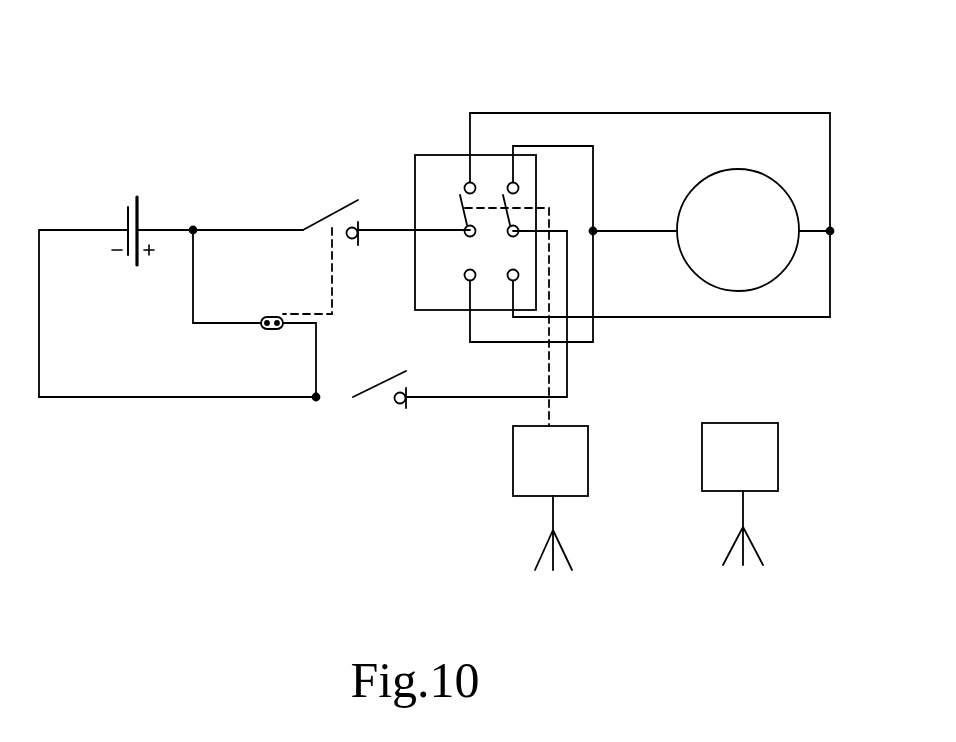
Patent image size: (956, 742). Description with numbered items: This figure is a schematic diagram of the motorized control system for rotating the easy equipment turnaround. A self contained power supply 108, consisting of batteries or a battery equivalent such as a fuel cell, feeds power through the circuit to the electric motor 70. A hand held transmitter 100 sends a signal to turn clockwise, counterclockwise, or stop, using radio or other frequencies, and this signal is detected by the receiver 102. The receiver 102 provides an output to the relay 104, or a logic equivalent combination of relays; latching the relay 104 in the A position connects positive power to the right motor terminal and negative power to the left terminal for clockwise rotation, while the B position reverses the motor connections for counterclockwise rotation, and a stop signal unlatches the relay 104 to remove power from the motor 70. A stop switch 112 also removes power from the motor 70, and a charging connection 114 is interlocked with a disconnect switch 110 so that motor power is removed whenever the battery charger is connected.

The electric motor 70 is at (739, 202).
The transmitter 100 is at (765, 450).
The receiver 102 is at (578, 458).
The relay 104 is at (457, 172).
The self contained power supply 108 is at (127, 222).
The disconnect switch 110 is at (327, 218).
The stop switch 112 is at (372, 395).
The charging connection 114 is at (271, 333).